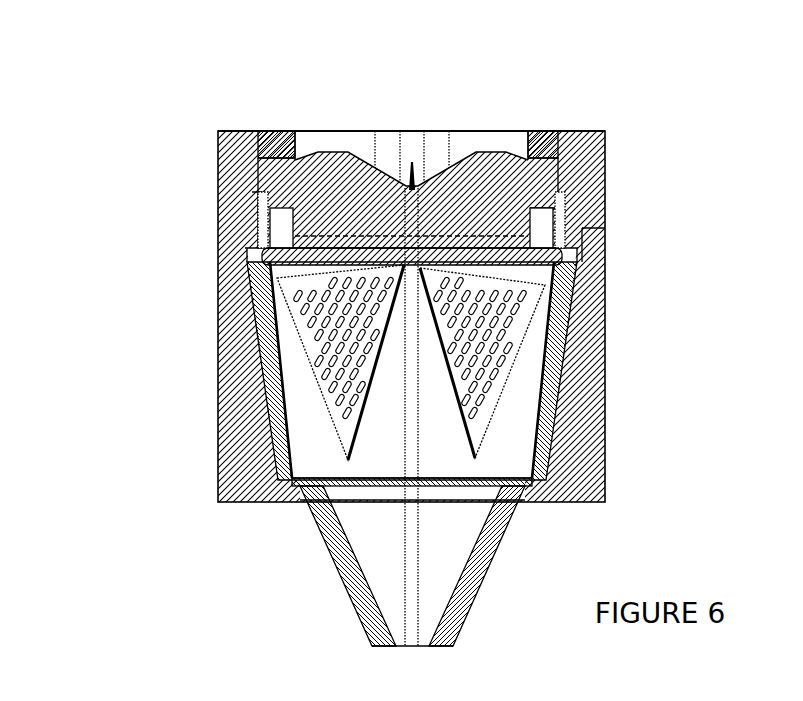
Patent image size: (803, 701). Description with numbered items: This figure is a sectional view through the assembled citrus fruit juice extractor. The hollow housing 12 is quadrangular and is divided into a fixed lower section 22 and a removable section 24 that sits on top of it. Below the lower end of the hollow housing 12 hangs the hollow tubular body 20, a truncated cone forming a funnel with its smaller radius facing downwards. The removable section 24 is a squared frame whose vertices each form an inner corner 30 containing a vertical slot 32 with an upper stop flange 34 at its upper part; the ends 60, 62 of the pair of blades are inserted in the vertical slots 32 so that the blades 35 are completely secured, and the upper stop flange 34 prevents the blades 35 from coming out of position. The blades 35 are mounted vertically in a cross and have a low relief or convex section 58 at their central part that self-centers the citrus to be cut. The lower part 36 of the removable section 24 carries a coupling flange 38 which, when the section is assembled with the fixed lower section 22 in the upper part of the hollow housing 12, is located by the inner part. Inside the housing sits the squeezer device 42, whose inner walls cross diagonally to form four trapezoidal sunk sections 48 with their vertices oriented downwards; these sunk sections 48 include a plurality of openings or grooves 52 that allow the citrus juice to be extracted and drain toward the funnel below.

The hollow housing 12 is at (359, 336).
The hollow tubular body 20 is at (342, 582).
The fixed lower section 22 is at (225, 435).
The removable section 24 is at (216, 168).
The inner corner 30 is at (255, 182).
The vertical slot 32 is at (265, 225).
The upper stop flange 34 is at (279, 145).
The blades 35 is at (326, 176).
The lower part 36 is at (245, 256).
The coupling flange 38 is at (253, 242).
The squeezer device 42 is at (527, 403).
The trapezoidal sunk sections 48 is at (474, 388).
The openings or grooves 52 is at (483, 404).
The convex section 58 is at (415, 184).
The blade end 60 is at (277, 184).
The blade end 62 is at (543, 190).